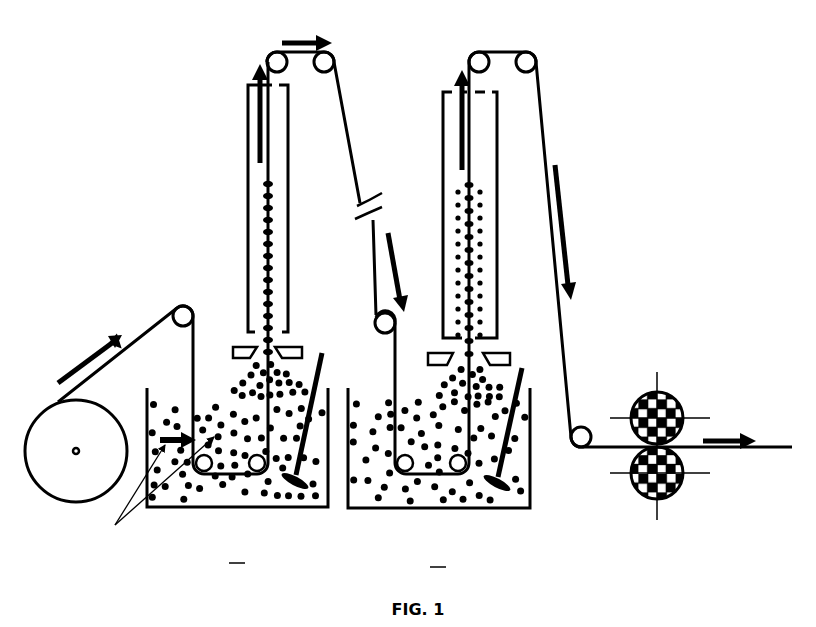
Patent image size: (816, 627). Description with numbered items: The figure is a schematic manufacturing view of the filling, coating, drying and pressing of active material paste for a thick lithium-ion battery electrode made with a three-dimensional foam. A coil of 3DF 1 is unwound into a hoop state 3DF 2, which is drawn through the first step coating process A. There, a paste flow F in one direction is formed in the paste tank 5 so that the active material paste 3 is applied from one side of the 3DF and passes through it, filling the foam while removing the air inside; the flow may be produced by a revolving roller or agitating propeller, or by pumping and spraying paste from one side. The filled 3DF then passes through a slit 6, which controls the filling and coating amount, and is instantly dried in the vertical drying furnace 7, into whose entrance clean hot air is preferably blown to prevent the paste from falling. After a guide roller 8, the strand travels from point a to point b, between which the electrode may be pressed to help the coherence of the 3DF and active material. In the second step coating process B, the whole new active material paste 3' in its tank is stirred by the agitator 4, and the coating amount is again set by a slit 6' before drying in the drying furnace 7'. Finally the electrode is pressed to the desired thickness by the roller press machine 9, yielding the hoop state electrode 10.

The coil of 3DF 1 is at (46, 412).
The hoop state 3DF 2 is at (147, 326).
The active material paste 3 is at (301, 453).
The new active material paste 3' is at (435, 461).
The agitator 4 is at (510, 407).
The paste tank 5 is at (173, 509).
The slit 6 is at (224, 297).
The slit 6' is at (531, 330).
The drying furnace 7 is at (224, 209).
The drying furnace 7' is at (532, 244).
The guide roller 8 is at (270, 53).
The roller press machine 9 is at (672, 397).
The hoop state electrode 10 is at (765, 440).
The point a is at (338, 52).
The point b is at (374, 316).
The paste flow F is at (158, 489).
The first step coating process A is at (215, 399).
The second step coating process B is at (491, 314).